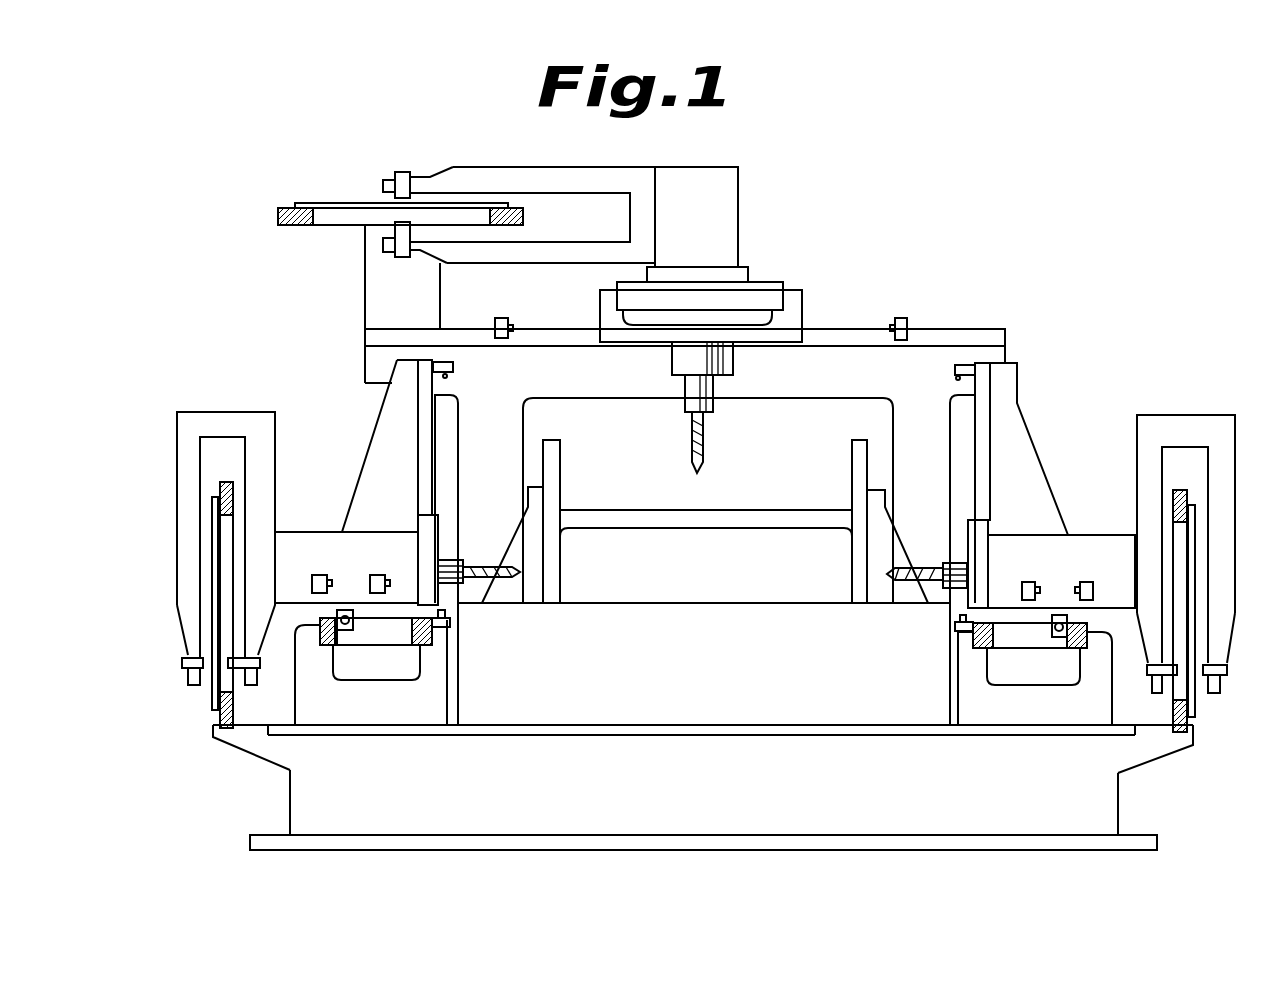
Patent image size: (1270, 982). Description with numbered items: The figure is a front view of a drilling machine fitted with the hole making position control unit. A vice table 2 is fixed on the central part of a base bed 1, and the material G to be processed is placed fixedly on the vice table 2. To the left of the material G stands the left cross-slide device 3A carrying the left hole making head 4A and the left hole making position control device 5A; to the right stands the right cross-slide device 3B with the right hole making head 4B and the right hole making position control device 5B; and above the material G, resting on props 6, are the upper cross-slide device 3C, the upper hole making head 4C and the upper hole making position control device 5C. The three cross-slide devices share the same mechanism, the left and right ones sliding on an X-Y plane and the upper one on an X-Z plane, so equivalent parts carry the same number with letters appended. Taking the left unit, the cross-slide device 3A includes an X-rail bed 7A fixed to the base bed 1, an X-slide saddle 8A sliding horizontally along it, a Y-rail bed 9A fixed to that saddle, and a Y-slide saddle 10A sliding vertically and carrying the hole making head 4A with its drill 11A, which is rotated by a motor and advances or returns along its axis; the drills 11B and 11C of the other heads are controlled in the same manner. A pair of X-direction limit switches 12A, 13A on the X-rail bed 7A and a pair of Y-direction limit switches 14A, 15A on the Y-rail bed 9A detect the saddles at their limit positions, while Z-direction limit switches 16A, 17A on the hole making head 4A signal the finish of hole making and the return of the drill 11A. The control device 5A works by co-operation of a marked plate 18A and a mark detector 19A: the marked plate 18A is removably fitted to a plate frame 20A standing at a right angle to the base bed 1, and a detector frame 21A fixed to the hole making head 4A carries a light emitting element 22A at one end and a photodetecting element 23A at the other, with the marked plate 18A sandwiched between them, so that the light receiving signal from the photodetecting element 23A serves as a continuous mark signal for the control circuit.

The base bed 1 is at (777, 793).
The vice table 2 is at (777, 679).
The left cross-slide device 3A is at (354, 432).
The right cross-slide device 3B is at (1046, 418).
The upper cross-slide device 3C is at (812, 286).
The left hole making head 4A is at (330, 537).
The right hole making head 4B is at (1087, 553).
The upper hole making head 4C is at (722, 213).
The left hole making position control device 5A is at (199, 604).
The right hole making position control device 5B is at (1207, 708).
The upper hole making position control device 5C is at (360, 188).
The props 6 is at (510, 418).
The X-rail bed 7A is at (432, 695).
The X-slide saddle 8A is at (402, 633).
The Y-rail bed 9A is at (424, 465).
The Y-slide saddle 10A is at (428, 535).
The drill 11A is at (490, 560).
The drill 11B is at (917, 567).
The drill 11C is at (693, 443).
The X-direction limit switch 12A is at (345, 632).
The X-direction limit switch 13A is at (351, 632).
The Y-direction limit switch 14A is at (453, 368).
The Y-direction limit switch 15A is at (448, 625).
The Z-direction limit switch 16A is at (388, 565).
The Z-direction limit switch 17A is at (313, 580).
The marked plate 18A is at (215, 535).
The mark detector 19A is at (182, 680).
The plate frame 20A is at (228, 577).
The detector frame 21A is at (187, 433).
The light emitting element 22A is at (182, 660).
The photodetecting element 23A is at (258, 689).
The material G is at (788, 515).